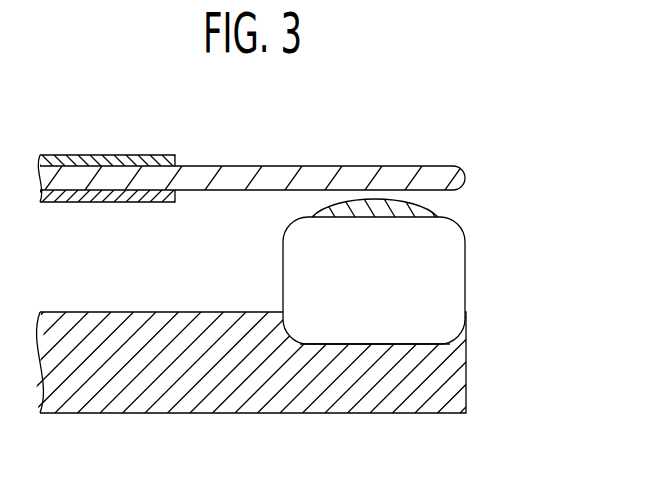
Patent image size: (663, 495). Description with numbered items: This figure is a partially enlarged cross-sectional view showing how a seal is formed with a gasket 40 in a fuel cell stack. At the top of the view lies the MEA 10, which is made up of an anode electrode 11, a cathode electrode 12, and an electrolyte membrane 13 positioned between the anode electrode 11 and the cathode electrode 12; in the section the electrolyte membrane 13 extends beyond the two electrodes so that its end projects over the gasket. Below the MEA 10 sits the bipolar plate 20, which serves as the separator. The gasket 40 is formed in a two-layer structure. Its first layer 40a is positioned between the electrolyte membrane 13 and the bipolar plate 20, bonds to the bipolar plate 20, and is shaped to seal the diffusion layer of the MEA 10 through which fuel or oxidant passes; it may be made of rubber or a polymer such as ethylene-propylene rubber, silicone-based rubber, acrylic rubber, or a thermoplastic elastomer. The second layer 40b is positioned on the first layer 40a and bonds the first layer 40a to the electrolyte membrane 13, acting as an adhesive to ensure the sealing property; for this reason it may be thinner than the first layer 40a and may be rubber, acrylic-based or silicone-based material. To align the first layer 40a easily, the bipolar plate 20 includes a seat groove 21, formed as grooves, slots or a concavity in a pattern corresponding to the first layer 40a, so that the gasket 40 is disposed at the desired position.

The MEA 10 is at (259, 181).
The anode electrode 11 is at (117, 155).
The cathode electrode 12 is at (115, 202).
The electrolyte membrane 13 is at (397, 167).
The bipolar plate 20 is at (440, 383).
The seat groove 21 is at (387, 345).
The gasket 40 is at (438, 265).
The first layer 40a is at (447, 248).
The second layer 40b is at (443, 203).